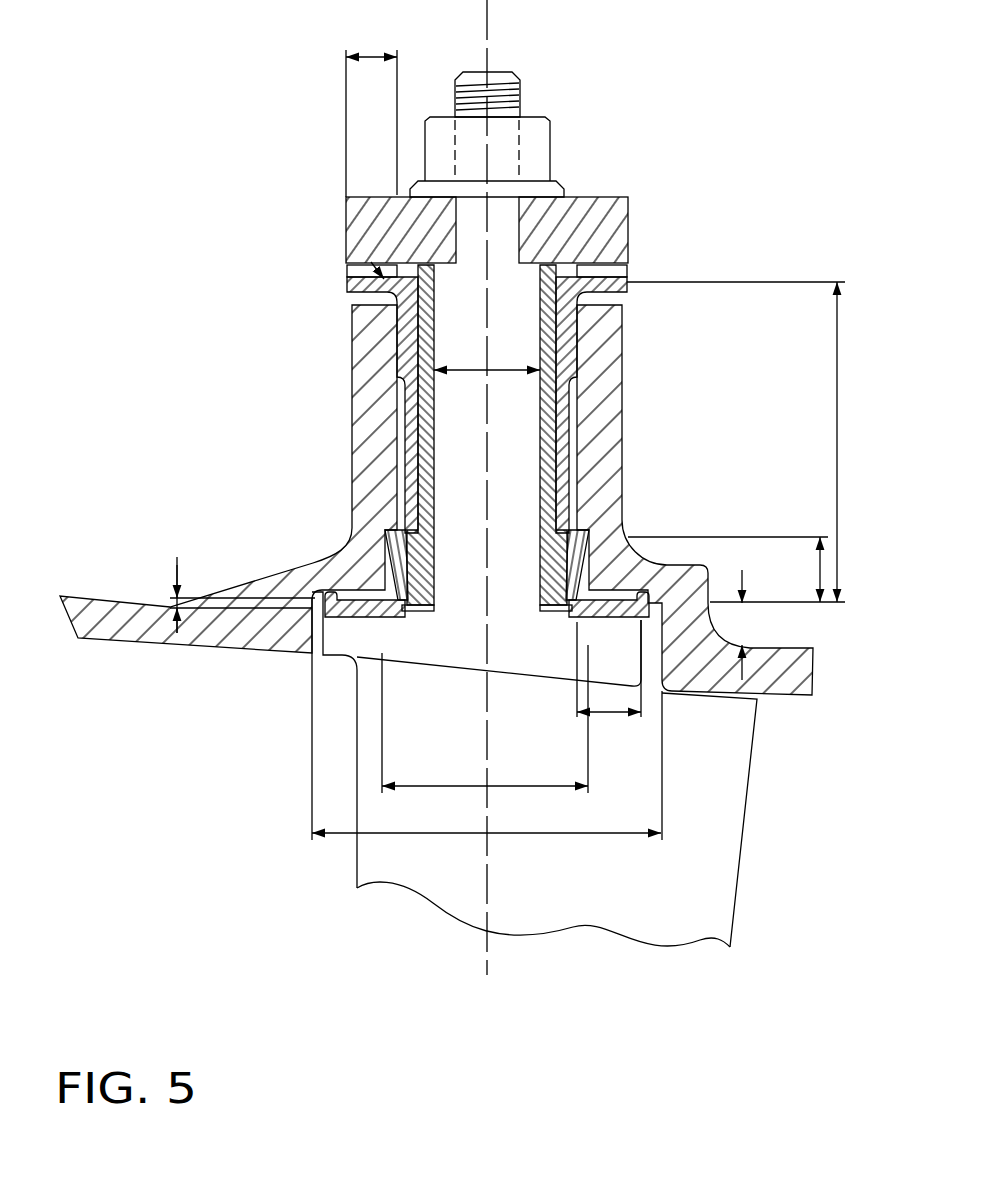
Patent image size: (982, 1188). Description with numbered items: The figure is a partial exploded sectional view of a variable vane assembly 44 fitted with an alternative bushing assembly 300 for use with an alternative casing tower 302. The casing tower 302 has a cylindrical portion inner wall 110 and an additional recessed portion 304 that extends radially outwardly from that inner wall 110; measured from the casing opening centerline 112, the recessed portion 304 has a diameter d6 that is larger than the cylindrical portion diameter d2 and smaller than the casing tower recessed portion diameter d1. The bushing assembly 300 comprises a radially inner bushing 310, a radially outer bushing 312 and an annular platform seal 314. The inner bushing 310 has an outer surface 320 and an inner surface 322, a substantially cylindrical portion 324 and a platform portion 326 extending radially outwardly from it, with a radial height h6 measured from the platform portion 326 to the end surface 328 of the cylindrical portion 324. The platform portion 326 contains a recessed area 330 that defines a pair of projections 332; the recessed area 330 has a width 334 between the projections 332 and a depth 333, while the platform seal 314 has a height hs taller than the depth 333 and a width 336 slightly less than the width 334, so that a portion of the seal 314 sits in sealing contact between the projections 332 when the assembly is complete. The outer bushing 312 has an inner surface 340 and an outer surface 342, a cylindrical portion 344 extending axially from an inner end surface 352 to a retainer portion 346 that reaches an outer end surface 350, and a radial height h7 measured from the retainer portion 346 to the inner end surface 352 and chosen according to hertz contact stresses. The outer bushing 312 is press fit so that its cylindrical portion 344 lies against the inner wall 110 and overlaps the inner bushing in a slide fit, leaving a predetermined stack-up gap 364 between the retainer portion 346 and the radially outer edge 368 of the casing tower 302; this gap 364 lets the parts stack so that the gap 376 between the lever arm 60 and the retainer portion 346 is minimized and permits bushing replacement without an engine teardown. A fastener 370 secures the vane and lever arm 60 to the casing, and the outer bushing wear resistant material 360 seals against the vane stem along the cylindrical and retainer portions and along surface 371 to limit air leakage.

The variable vane assembly 44 is at (228, 112).
The lever arm 60 is at (610, 197).
The casing tower cylindrical portion inner wall 110 is at (572, 446).
The casing opening centerline 112 is at (490, 33).
The bushing assembly 300 is at (436, 499).
The casing tower 302 is at (612, 400).
The casing tower recessed portion 304 is at (594, 520).
The radially inner bushing 310 is at (626, 543).
The radially outer bushing 312 is at (570, 356).
The annular platform seal 314 is at (668, 566).
The outer surface 320 is at (382, 560).
The inner surface 322 is at (378, 614).
The cylindrical portion 324 is at (406, 568).
The platform portion 326 is at (566, 618).
The end surface 328 is at (393, 524).
The recessed area 330 is at (366, 626).
The projections 332 is at (572, 612).
The depth 333 is at (175, 563).
The width 334 is at (608, 718).
The width 336 is at (373, 56).
The inner surface 340 is at (620, 300).
The outer surface 342 is at (615, 273).
The cylindrical portion 344 is at (402, 398).
The retainer portion 346 is at (396, 262).
The outer end surface 350 is at (347, 268).
The inner end surface 352 is at (424, 607).
The wear resistant material 360 is at (615, 256).
The gap 364 is at (337, 295).
The radially outer edge 368 is at (356, 304).
The fastener 370 is at (543, 117).
The surface 371 is at (400, 263).
The gap 376 is at (632, 262).
The casing tower recessed portion diameter d1 is at (472, 833).
The casing tower cylindrical portion diameter d2 is at (487, 370).
The casing tower recessed portion diameter d6 is at (462, 787).
The radial height h6 is at (820, 572).
The radial height h7 is at (837, 440).
The height hs is at (745, 620).